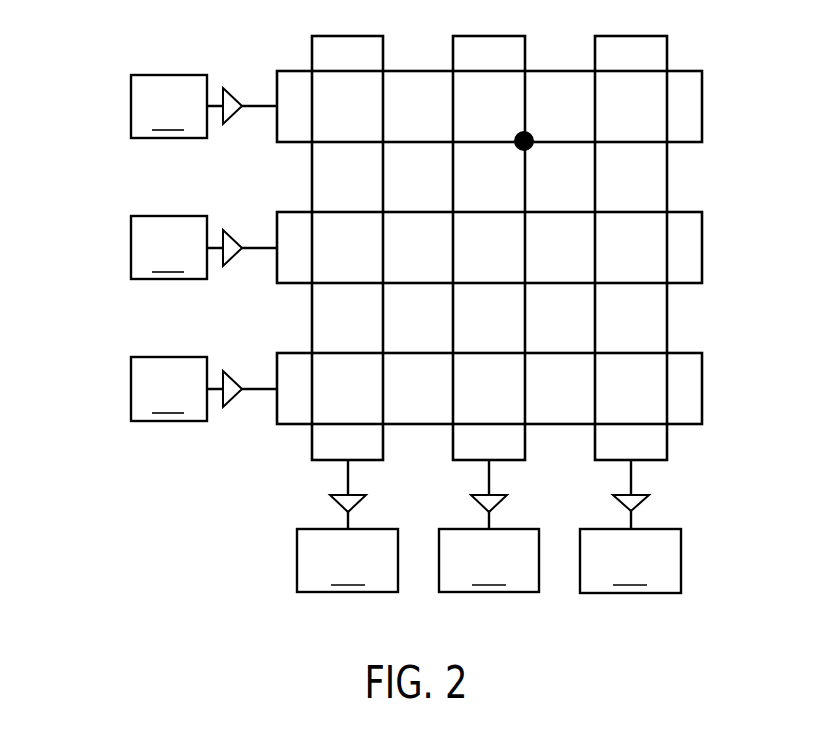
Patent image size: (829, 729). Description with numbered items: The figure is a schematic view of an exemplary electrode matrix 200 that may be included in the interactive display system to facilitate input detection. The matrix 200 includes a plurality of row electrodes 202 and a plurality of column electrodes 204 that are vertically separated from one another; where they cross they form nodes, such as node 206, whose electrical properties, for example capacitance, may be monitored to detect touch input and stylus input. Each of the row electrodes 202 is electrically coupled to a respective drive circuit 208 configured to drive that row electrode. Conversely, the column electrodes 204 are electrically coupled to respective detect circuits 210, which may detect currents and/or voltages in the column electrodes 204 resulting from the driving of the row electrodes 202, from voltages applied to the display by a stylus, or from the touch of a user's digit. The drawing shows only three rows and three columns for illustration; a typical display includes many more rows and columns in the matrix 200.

The electrode matrix 200 is at (412, 343).
The row electrodes 202 is at (93, 249).
The column electrodes 204 is at (492, 602).
The node 206 is at (526, 150).
The drive circuit 208 is at (204, 248).
The detect circuit 210 is at (489, 526).